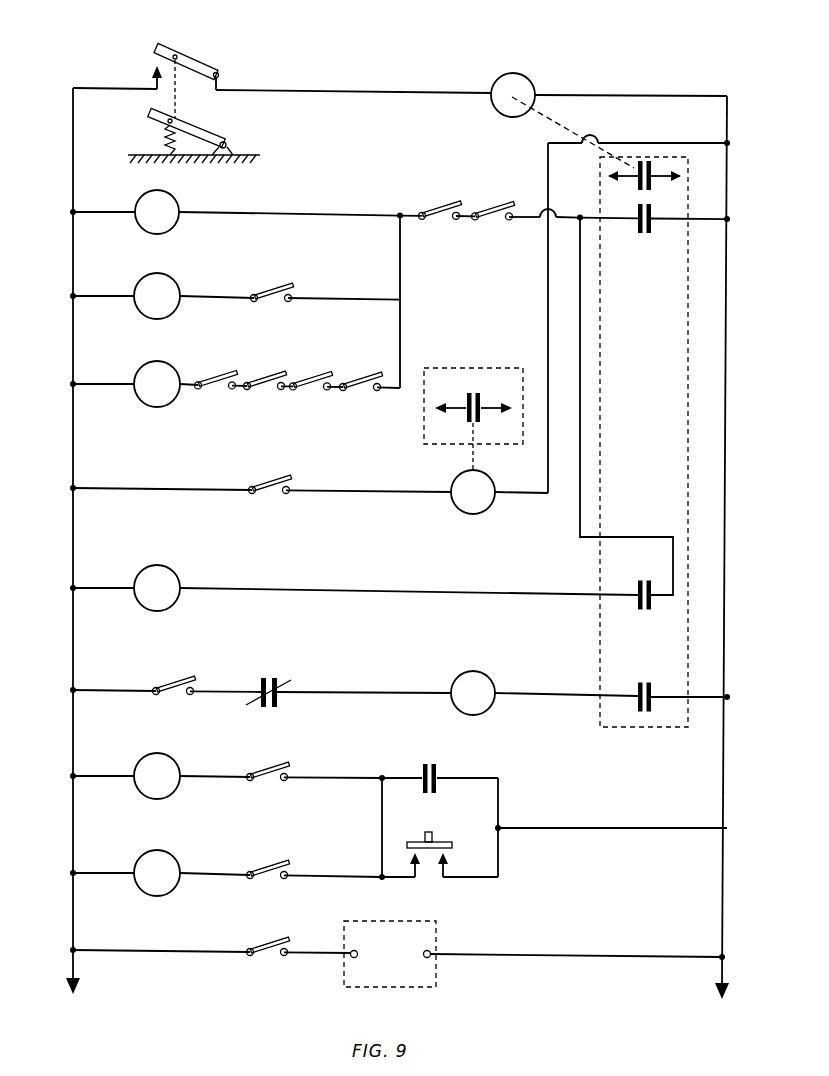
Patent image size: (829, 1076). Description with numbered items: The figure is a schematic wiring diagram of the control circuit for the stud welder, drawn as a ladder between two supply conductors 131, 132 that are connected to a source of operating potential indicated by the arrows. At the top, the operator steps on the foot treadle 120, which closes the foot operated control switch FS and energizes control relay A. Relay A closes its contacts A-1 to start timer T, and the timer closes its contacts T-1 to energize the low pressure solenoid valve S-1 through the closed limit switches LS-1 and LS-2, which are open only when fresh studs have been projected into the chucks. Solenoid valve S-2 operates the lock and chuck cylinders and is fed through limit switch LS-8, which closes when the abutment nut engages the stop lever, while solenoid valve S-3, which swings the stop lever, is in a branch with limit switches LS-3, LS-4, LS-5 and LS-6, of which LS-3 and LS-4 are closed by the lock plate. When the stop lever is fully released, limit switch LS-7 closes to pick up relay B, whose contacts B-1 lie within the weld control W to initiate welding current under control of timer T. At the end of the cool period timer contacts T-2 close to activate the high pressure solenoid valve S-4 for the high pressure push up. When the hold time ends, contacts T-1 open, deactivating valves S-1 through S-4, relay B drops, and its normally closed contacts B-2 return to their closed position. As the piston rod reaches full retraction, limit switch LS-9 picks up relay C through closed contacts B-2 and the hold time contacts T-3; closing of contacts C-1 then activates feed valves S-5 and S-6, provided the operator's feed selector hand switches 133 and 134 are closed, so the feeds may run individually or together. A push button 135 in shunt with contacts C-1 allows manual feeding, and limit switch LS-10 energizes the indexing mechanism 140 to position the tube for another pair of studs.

The foot operated control switch FS is at (196, 62).
The foot treadle 120 is at (198, 124).
The conductor 131 is at (72, 172).
The conductor 132 is at (727, 328).
The low pressure solenoid valve S-1 is at (174, 197).
The solenoid valve S-2 is at (170, 281).
The solenoid valve S-3 is at (170, 369).
The high pressure solenoid valve S-4 is at (168, 574).
The solenoid valve S-5 is at (169, 761).
The solenoid valve S-6 is at (160, 858).
The limit switch LS-1 is at (436, 206).
The limit switch LS-2 is at (498, 206).
The limit switch LS-3 is at (225, 372).
The limit switch LS-4 is at (265, 392).
The limit switch LS-5 is at (308, 372).
The limit switch LS-6 is at (363, 391).
The limit switch LS-7 is at (271, 493).
The limit switch LS-8 is at (278, 285).
The limit switch LS-9 is at (176, 680).
The limit switch LS-10 is at (264, 943).
The control relay A is at (516, 80).
The relay contacts A-1 is at (647, 190).
The relay B is at (473, 503).
The relay contacts B-1 is at (475, 383).
The normally closed contacts B-2 is at (270, 676).
The relay C is at (470, 683).
The relay contacts C-1 is at (428, 761).
The timer T is at (598, 561).
The timer contacts T-1 is at (644, 237).
The timer contacts T-2 is at (644, 584).
The timer contacts T-3 is at (642, 682).
The weld control W is at (492, 367).
The feed selector hand switch 133 is at (272, 763).
The feed selector hand switch 134 is at (268, 860).
The push button 135 is at (440, 843).
The indexing mechanism 140 is at (398, 919).